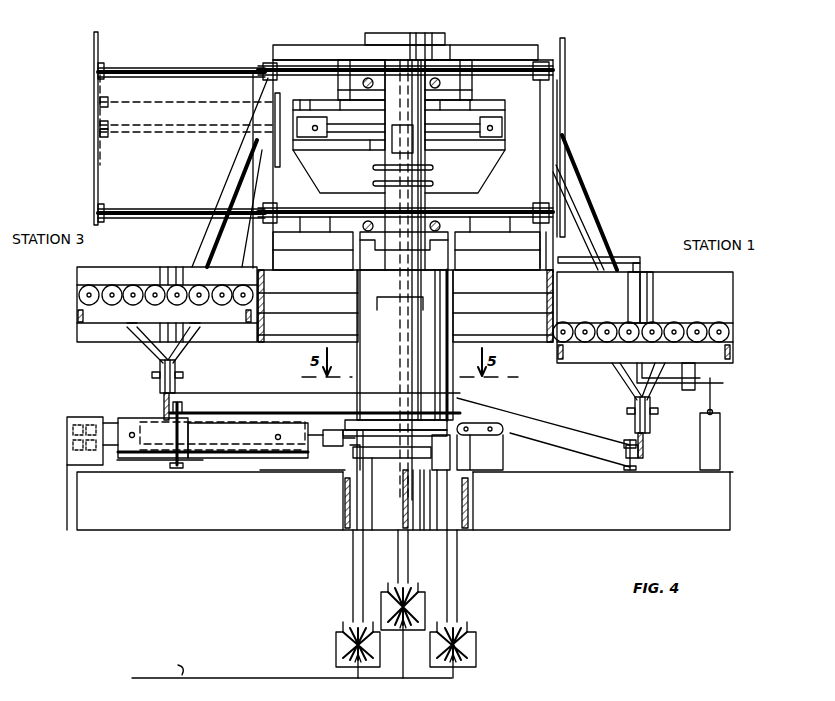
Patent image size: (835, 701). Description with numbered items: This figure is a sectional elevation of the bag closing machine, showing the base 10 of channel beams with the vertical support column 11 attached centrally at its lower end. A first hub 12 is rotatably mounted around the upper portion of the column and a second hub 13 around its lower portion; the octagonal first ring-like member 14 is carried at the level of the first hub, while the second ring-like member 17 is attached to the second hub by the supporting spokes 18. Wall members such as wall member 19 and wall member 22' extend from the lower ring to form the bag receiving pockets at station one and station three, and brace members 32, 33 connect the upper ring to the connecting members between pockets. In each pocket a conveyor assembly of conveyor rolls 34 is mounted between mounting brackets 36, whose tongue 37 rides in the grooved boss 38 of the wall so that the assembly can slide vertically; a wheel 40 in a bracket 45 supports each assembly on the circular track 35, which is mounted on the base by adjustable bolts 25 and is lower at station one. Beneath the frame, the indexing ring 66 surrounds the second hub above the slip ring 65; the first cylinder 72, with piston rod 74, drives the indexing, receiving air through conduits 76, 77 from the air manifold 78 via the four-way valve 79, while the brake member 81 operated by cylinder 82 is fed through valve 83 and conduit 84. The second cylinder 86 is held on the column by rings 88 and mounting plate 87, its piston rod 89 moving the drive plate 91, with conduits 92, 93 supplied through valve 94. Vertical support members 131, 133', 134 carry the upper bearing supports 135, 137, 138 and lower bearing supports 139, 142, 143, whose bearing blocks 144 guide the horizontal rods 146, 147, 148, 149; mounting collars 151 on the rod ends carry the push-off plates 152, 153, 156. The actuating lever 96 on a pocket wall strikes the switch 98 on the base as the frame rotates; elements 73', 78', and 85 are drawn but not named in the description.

The base 10 is at (688, 530).
The vertical support column 11 is at (428, 155).
The first hub 12 is at (403, 48).
The second hub 13 is at (392, 363).
The first ring-like member 14 is at (262, 66).
The second ring-like member 17 is at (490, 277).
The second plurality of supporting spokes 18 is at (326, 307).
The wall member of first pocket 19 is at (733, 272).
The wall member of third pocket 22' is at (167, 288).
The adjustable bolts 25 is at (190, 467).
The brace member 32 is at (225, 193).
The brace member 33 is at (592, 200).
The conveyor rolls 34 is at (690, 322).
The circular track 35 is at (200, 393).
The mounting brackets 36 is at (80, 314).
The tongue 37 is at (635, 307).
The grooved boss 38 is at (650, 290).
The wheel 40 is at (645, 430).
The bracket 45 is at (617, 378).
The slip ring 65 is at (389, 447).
The indexing ring 66 is at (365, 430).
The first cylinder 72 is at (240, 460).
The control box 73' is at (114, 455).
The piston rod 74 is at (305, 430).
The fluid conduit 76 is at (352, 552).
The fluid conduit 77 is at (363, 568).
The air manifold 78 is at (292, 664).
The air supply branch 78' is at (405, 648).
The solenoid actuated four-way valve 79 is at (343, 645).
The double acting brake member 81 is at (425, 430).
The cylinder 82 is at (513, 430).
The solenoid actuated valve 83 is at (465, 645).
The conduit 84 is at (447, 580).
The air line 85 is at (457, 552).
The second cylinder 86 is at (364, 130).
The mounting plate 87 is at (490, 178).
The rings or U-bolts 88 is at (434, 184).
The piston rod 89 is at (278, 160).
The drive plate 91 is at (274, 150).
The conduit 92 is at (398, 552).
The conduit 93 is at (408, 552).
The solenoid actuated four-way valve 94 is at (405, 635).
The actuating lever 96 is at (615, 257).
The switch 98 is at (720, 433).
The vertical support member 131 is at (540, 255).
The vertical support member 133' is at (313, 251).
The vertical support member 134 is at (345, 263).
The first upper bearing support 135 is at (556, 44).
The third upper bearing support 137 is at (283, 60).
The fourth upper bearing support 138 is at (355, 80).
The first lower bearing support 139 is at (531, 208).
The third lower bearing support 142 is at (282, 211).
The fourth lower bearing support 143 is at (455, 227).
The bearing block 144 is at (263, 80).
The first upper pair of horizontal rods 146 is at (182, 77).
The second upper pair of horizontal rods 147 is at (445, 80).
The first lower pair of horizontal rods 148 is at (161, 207).
The second lower pair of horizontal rods 149 is at (362, 228).
The mounting collar 151 is at (104, 66).
The first bag push-off plate 152 is at (567, 108).
The third bag push-off plate 153 is at (95, 53).
The fourth bag push-off plate 156 is at (450, 45).